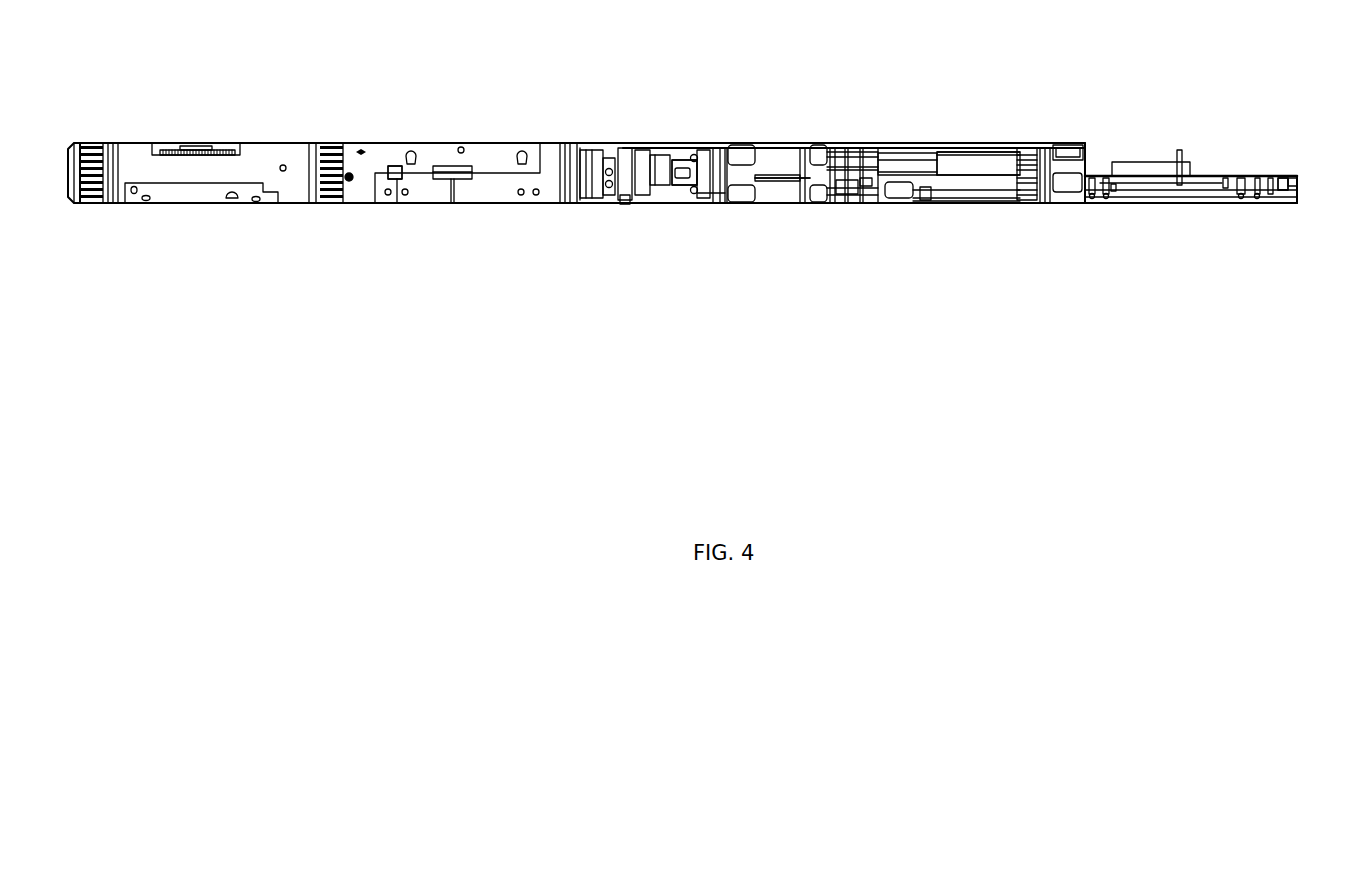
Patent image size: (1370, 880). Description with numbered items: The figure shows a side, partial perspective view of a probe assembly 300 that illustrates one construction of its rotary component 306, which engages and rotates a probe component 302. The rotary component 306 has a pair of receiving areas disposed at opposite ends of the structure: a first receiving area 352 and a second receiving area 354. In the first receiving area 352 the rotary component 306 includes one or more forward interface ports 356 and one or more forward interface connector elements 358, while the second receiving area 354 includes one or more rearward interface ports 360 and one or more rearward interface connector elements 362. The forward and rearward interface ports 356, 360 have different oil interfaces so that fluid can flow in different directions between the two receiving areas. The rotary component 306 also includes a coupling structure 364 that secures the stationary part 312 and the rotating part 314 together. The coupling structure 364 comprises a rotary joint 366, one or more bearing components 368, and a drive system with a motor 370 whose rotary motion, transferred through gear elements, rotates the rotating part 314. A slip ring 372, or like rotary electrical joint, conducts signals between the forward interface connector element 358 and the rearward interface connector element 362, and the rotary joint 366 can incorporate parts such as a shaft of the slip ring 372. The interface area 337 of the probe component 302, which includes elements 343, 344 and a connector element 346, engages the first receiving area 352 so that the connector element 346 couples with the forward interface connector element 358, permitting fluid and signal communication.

The probe assembly 300 is at (188, 322).
The probe component 302 is at (198, 122).
The rotary component 306 is at (1283, 370).
The stationary part 312 is at (1279, 285).
The rotating part 314 is at (1081, 75).
The interface area 337 is at (540, 70).
The mounting block 343 is at (363, 129).
The mounting block 344 is at (386, 160).
The connector element 346 is at (452, 160).
The first receiving area 352 is at (357, 214).
The second receiving area 354 is at (1302, 215).
The forward interface port 356 is at (395, 206).
The forward interface connector element 358 is at (451, 206).
The rearward interface port 360 is at (1284, 158).
The rearward interface connector element 362 is at (1145, 162).
The coupling structure 364 is at (1086, 252).
The rotary joint 366 is at (876, 130).
The bearing component 368 is at (690, 143).
The motor 370 is at (970, 160).
The slip ring 372 is at (780, 182).